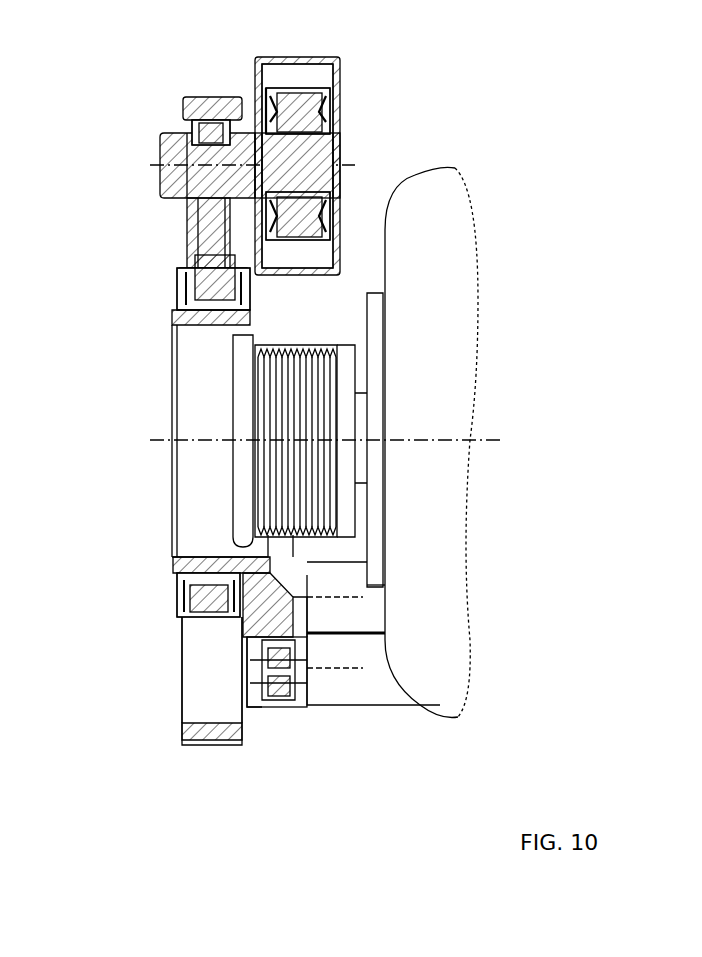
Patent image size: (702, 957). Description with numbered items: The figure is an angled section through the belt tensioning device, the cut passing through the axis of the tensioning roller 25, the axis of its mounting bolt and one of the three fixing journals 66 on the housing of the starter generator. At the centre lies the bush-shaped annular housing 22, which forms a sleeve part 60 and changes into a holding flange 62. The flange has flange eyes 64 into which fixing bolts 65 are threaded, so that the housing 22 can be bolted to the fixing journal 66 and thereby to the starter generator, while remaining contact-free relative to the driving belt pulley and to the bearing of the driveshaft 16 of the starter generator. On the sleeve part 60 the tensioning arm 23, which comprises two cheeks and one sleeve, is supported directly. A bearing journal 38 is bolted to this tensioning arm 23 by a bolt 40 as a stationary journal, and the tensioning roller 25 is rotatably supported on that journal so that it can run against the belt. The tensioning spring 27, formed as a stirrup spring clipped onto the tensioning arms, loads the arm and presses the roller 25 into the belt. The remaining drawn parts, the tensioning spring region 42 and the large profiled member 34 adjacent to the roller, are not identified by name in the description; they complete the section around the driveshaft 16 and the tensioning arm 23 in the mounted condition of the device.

The tensioning roller 25 is at (272, 57).
The bearing journal 38 is at (340, 152).
The bolt 40 is at (166, 152).
The tensioning arm 23 is at (92, 213).
The tensioning spring 27 is at (200, 732).
The spring 42 is at (268, 422).
The driveshaft 16 is at (362, 412).
The belt pulley 34 is at (432, 168).
The fixing journal 66 is at (360, 690).
The sleeve part 60 is at (200, 590).
The holding flange 62 is at (258, 618).
The flange eye 64 is at (305, 702).
The fixing bolt 65 is at (278, 702).
The housing 22 is at (209, 669).